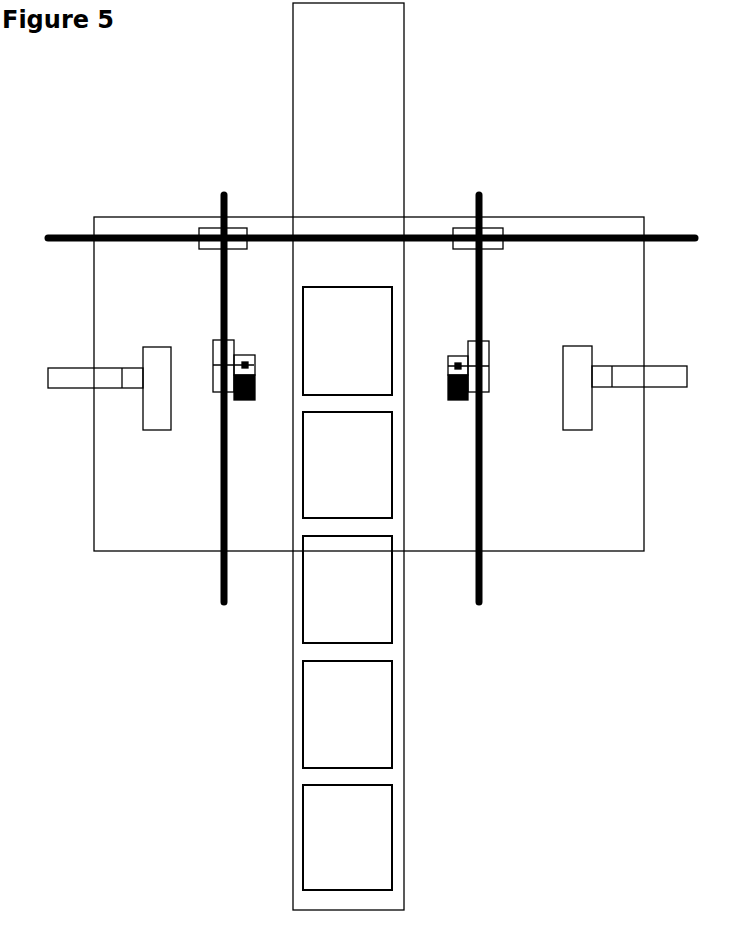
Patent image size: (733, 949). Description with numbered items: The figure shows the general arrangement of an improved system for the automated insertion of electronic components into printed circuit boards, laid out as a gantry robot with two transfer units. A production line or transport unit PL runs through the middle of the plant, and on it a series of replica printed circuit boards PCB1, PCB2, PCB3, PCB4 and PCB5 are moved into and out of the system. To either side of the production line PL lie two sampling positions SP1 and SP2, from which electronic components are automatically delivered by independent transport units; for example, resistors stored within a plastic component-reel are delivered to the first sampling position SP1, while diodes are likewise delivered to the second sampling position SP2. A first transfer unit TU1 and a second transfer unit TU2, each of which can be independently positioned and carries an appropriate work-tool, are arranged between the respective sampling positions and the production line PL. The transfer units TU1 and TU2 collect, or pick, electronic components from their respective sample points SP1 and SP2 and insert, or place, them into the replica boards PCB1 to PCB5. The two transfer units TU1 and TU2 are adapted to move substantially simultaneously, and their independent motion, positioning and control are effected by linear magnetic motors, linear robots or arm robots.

The production line PL is at (404, 89).
The first transfer unit TU1 is at (200, 393).
The second transfer unit TU2 is at (520, 390).
The first sampling position SP1 is at (162, 375).
The second sampling position SP2 is at (582, 377).
The replica printed circuit board PCB1 is at (347, 341).
The replica printed circuit board PCB2 is at (347, 465).
The replica printed circuit board PCB3 is at (347, 589).
The replica printed circuit board PCB4 is at (347, 714).
The replica printed circuit board PCB5 is at (347, 837).